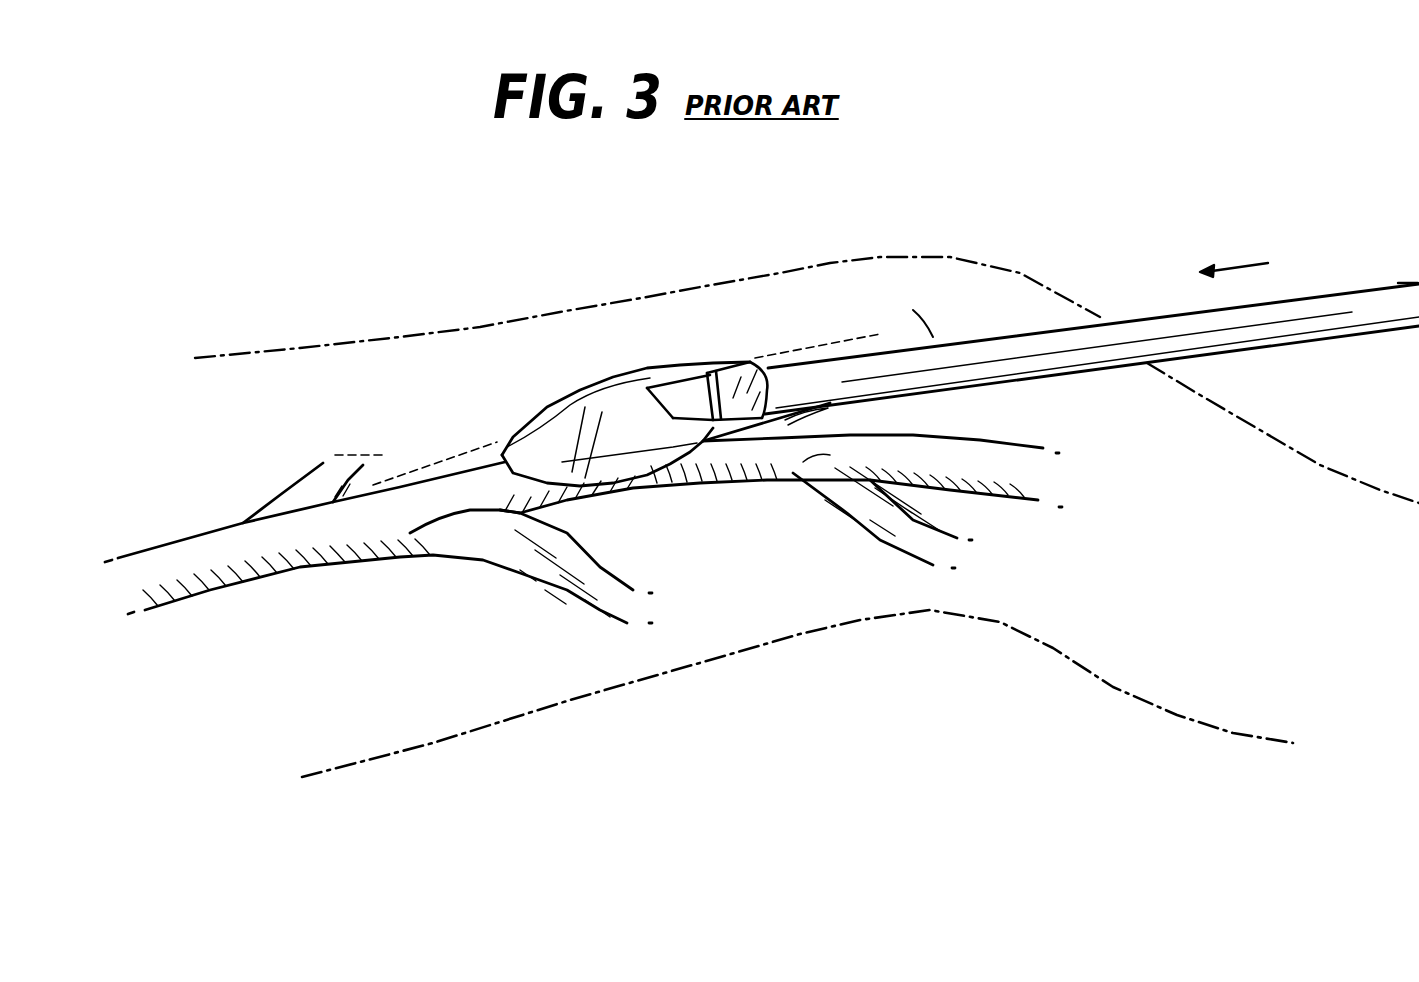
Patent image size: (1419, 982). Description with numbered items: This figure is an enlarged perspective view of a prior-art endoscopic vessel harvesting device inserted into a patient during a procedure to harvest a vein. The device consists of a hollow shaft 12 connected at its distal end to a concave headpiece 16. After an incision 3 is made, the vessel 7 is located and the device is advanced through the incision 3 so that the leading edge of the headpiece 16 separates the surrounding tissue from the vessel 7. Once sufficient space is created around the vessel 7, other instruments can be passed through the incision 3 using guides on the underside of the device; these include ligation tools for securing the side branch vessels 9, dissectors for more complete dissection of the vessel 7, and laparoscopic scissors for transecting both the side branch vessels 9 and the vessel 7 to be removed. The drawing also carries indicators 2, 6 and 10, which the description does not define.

The body tissue 2 is at (418, 677).
The incision 3 is at (1015, 433).
The hub 6 is at (680, 383).
The vessel 7 is at (405, 505).
The side branch vessels 9 is at (898, 533).
The puncture tract 10 is at (808, 333).
The hollow shaft 12 is at (1317, 340).
The concave headpiece 16 is at (563, 393).